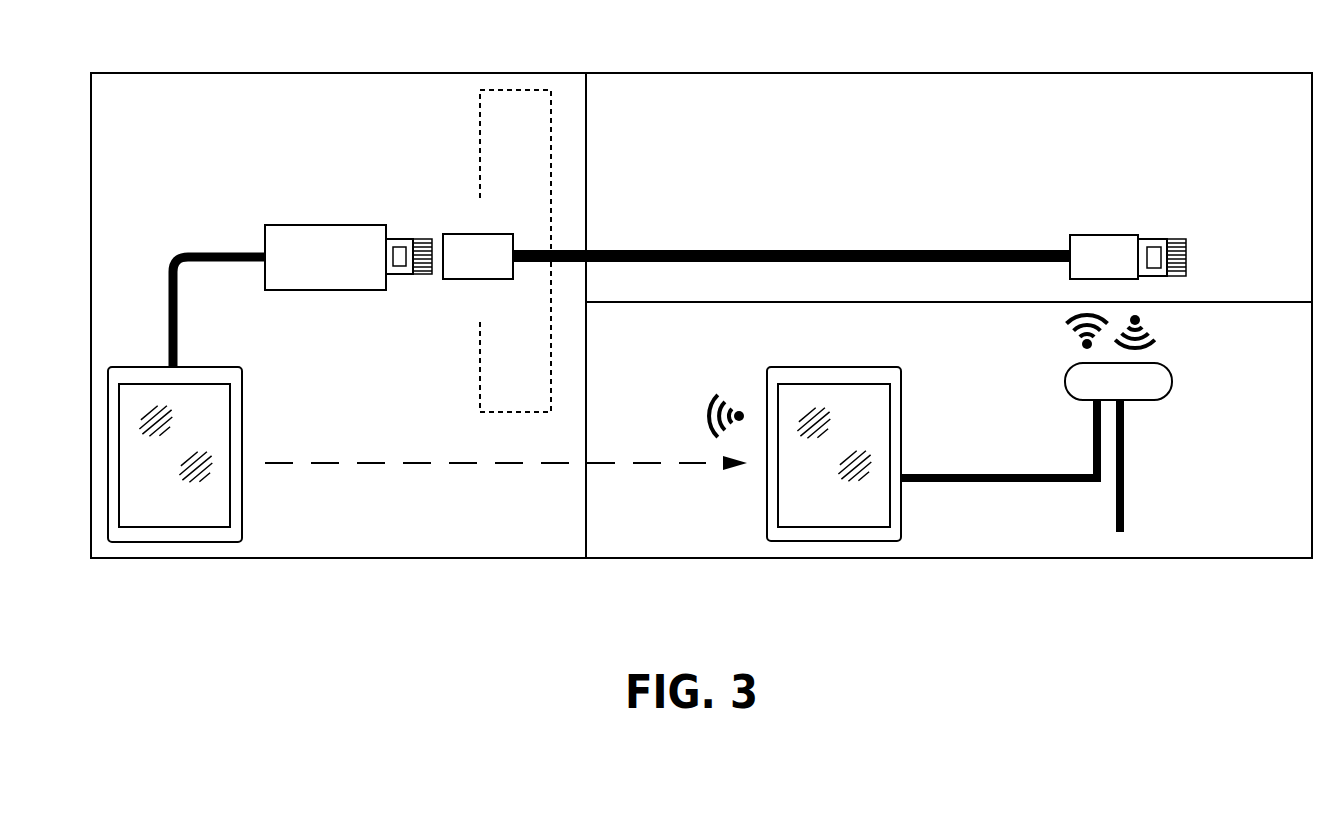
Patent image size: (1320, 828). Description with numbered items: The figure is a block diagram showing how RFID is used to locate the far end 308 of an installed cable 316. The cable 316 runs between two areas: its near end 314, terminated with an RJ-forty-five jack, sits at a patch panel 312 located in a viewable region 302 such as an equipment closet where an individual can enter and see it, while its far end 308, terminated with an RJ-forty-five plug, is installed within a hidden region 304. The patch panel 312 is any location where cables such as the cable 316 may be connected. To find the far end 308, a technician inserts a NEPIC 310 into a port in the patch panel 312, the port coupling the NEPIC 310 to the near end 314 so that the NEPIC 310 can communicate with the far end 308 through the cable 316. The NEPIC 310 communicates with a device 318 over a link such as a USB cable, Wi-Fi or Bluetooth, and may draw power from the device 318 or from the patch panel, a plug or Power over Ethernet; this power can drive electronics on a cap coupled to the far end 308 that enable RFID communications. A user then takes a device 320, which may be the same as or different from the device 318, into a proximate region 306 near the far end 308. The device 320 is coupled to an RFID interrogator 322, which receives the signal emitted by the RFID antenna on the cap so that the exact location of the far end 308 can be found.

The viewable region 302 is at (259, 72).
The hidden region 304 is at (845, 72).
The proximate region 306 is at (1135, 559).
The far end 308 is at (1082, 235).
The NEPIC 310 is at (295, 225).
The patch panel 312 is at (480, 163).
The near end 314 is at (475, 234).
The cable 316 is at (790, 250).
The device 318 is at (242, 432).
The device 320 is at (901, 422).
The RFID interrogator 322 is at (1172, 385).